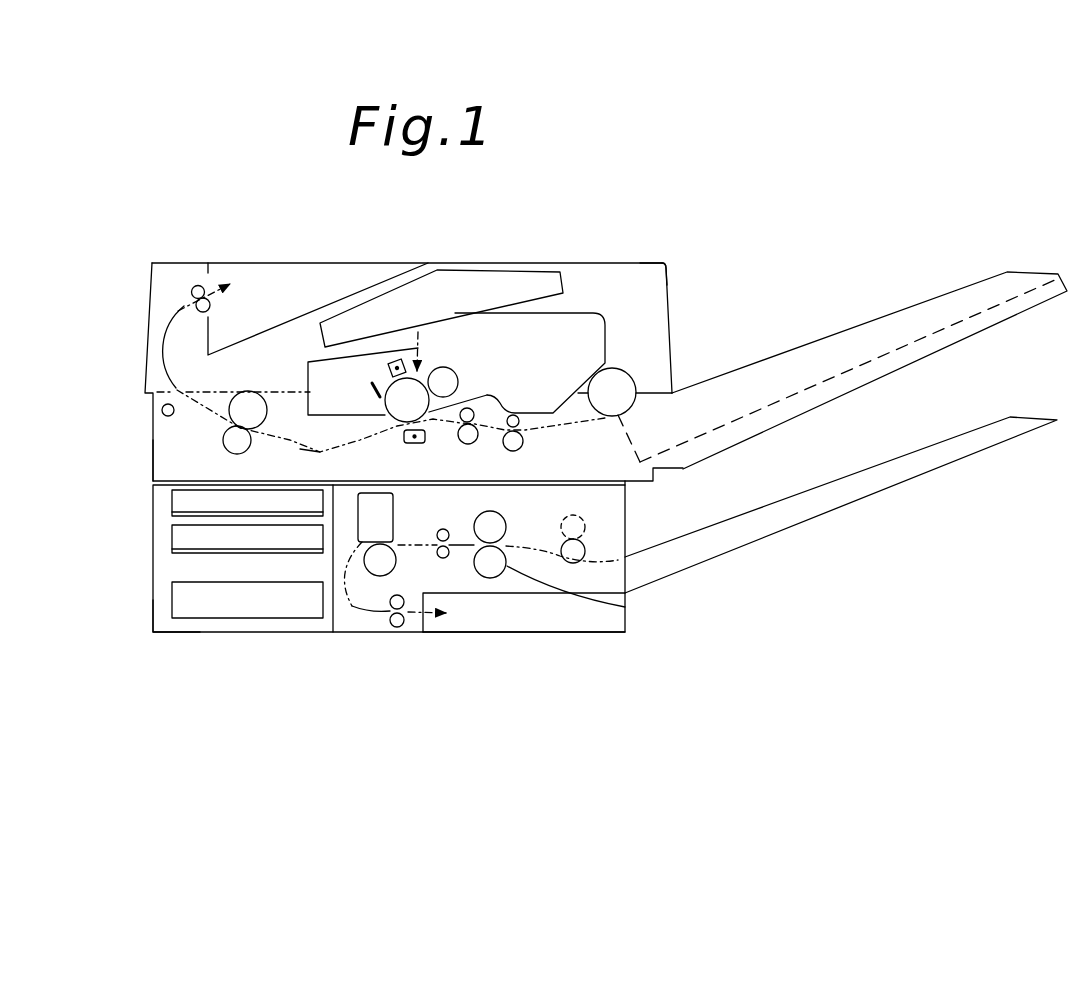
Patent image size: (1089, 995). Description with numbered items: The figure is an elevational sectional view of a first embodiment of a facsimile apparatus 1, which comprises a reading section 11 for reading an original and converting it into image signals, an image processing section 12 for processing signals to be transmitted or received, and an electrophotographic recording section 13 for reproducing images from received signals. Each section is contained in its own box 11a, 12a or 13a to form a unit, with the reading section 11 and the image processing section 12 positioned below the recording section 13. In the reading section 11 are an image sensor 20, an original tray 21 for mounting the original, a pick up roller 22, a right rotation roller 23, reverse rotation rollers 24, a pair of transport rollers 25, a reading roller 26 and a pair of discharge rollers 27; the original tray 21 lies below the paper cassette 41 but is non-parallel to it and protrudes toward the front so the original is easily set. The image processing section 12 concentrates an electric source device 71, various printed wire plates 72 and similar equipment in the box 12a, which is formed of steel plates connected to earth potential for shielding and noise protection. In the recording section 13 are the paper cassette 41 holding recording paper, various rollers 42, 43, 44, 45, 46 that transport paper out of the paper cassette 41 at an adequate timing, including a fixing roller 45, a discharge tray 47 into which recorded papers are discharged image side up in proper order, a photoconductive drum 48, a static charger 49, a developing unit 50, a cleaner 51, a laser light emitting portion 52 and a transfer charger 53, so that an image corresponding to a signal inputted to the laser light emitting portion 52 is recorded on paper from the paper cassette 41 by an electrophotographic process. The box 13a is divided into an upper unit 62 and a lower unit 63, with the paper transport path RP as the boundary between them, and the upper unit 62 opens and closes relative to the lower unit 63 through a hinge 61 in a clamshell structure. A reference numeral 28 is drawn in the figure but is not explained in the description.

The facsimile apparatus 1 is at (399, 259).
The reading section 11 is at (506, 642).
The box 11a is at (527, 633).
The image processing section 12 is at (238, 640).
The box 12a is at (173, 633).
The recording section 13 is at (676, 298).
The box 13a is at (666, 268).
The image sensor 20 is at (395, 501).
The original tray 21 is at (857, 503).
The pick up roller 22 is at (586, 547).
The right rotation roller 23 is at (500, 519).
The reverse rotation roller 24 is at (625, 607).
The pair of transport rollers 25 is at (447, 560).
The reading roller 26 is at (376, 570).
The pair of discharge rollers 27 is at (396, 628).
The paper cassette 28 is at (475, 613).
The paper cassette 41 is at (947, 346).
The roller 42 is at (620, 374).
The roller 43 is at (523, 441).
The roller 44 is at (467, 445).
The fixing roller 45 is at (222, 437).
The roller 46 is at (190, 289).
The discharge tray 47 is at (313, 307).
The photoconductive drum 48 is at (420, 377).
The static charger 49 is at (389, 370).
The developing unit 50 is at (459, 380).
The cleaner 51 is at (378, 397).
The laser light emitting portion 52 is at (505, 282).
The transfer charger 53 is at (403, 437).
The hinge 61 is at (161, 408).
The upper unit 62 is at (147, 333).
The lower unit 63 is at (150, 460).
The electric source device 71 is at (172, 598).
The printed wire plates 72 is at (172, 537).
The paper transport path RP is at (320, 452).